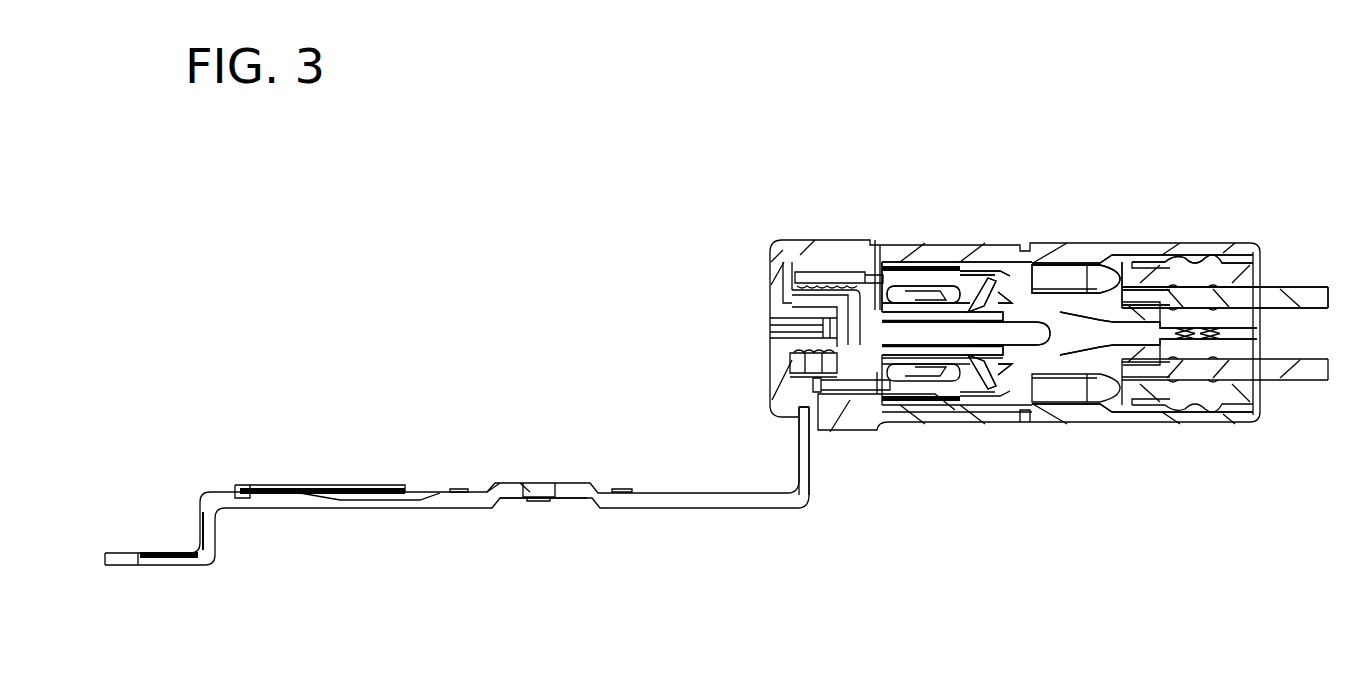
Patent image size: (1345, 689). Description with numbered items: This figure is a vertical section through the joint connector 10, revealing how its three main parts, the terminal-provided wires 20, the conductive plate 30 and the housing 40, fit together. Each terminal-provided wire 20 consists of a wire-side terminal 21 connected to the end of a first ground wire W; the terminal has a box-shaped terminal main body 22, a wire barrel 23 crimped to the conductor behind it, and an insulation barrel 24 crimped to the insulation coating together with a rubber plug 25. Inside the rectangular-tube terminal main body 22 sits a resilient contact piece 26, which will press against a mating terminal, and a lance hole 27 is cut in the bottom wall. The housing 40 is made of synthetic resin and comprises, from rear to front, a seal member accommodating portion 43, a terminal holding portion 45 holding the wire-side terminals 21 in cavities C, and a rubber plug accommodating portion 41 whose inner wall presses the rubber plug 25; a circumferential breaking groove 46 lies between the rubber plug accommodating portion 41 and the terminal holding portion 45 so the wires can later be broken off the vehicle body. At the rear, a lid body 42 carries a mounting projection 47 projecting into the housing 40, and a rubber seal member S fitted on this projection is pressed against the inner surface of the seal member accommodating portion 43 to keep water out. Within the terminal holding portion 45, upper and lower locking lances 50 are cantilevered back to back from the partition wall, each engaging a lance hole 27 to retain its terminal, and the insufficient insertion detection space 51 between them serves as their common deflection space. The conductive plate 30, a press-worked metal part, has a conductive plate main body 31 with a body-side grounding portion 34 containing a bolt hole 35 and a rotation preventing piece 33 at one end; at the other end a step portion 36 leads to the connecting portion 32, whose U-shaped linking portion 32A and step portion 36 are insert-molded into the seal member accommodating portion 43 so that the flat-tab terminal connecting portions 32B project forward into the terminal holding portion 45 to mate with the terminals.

The joint connector 10 is at (739, 138).
The terminal-provided wire 20 is at (1289, 268).
The wire-side terminal 21 is at (1050, 262).
The terminal main body 22 is at (948, 262).
The wire barrel 23 is at (1072, 262).
The insulation barrel 24 is at (1150, 265).
The rubber plug 25 is at (1205, 262).
The resilient contact piece 26 is at (900, 290).
The lance hole 27 is at (978, 292).
The conductive plate 30 is at (493, 383).
The conductive plate main body 31 is at (424, 498).
The connecting portion 32 is at (858, 280).
The linking portion 32A is at (830, 282).
The terminal connecting portion 32B is at (925, 262).
The rotation preventing piece 33 is at (123, 556).
The body-side grounding portion 34 is at (515, 486).
The bolt hole 35 is at (539, 488).
The step portion 36 is at (805, 437).
The housing 40 is at (1074, 138).
The rubber plug accommodating portion 41 is at (1238, 252).
The lid body 42 is at (772, 278).
The seal member accommodating portion 43 is at (803, 260).
The terminal holding portion 45 is at (967, 410).
The breaking groove 46 is at (1027, 420).
The mounting projection 47 is at (812, 308).
The locking lance 50 is at (990, 262).
The insufficient insertion detection space 51 is at (900, 390).
The cavity C is at (1010, 262).
The seal member S is at (820, 370).
The first ground wire W is at (1300, 292).